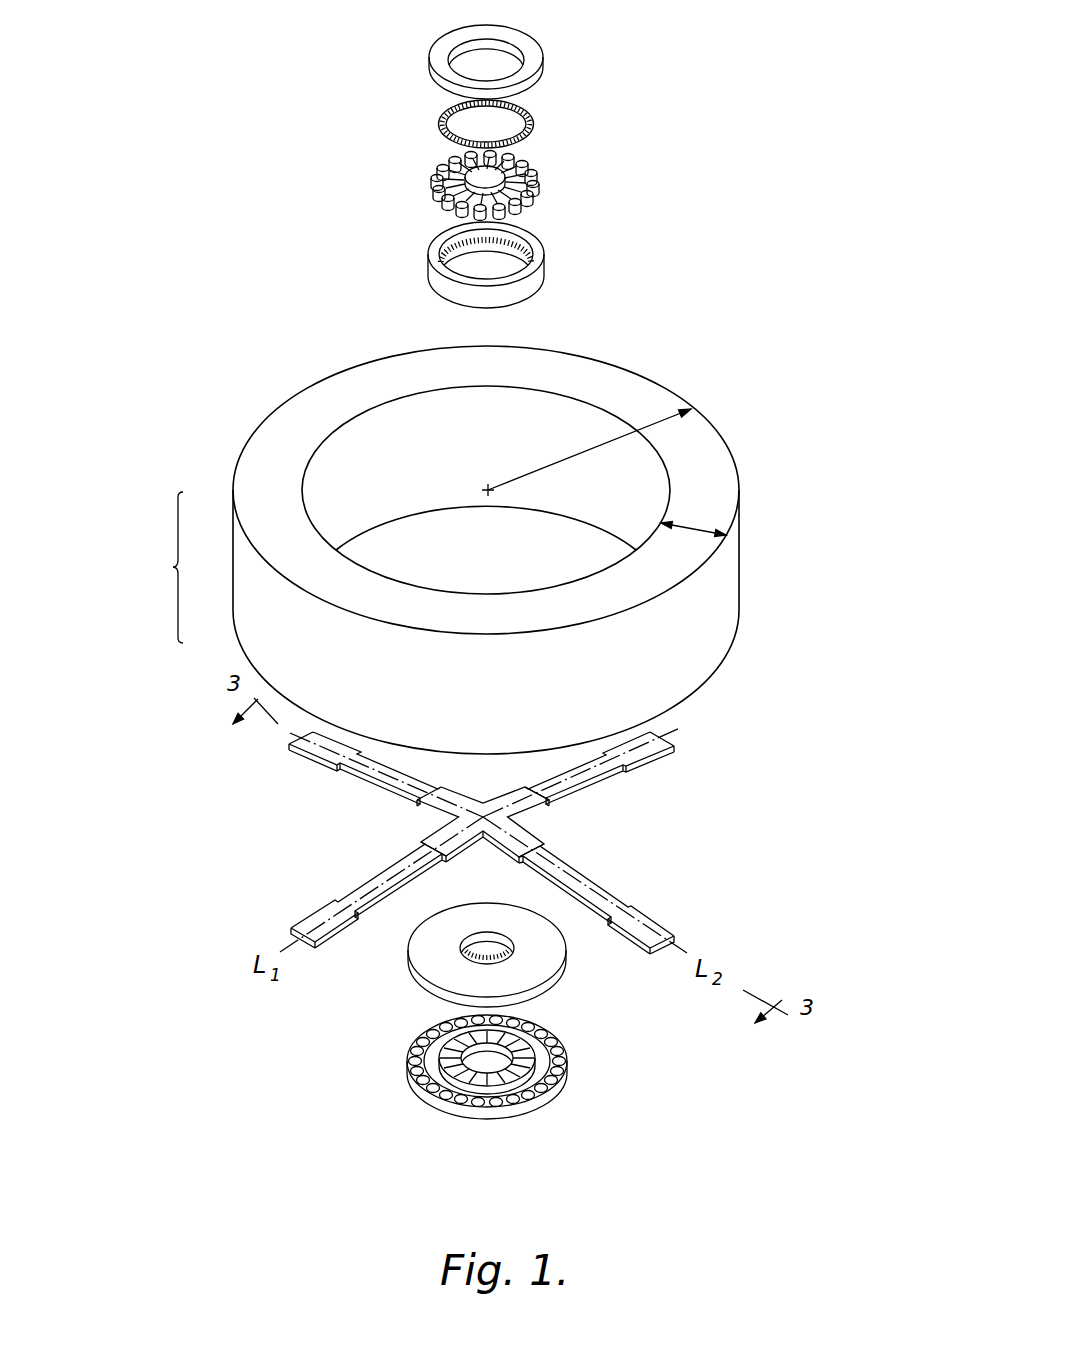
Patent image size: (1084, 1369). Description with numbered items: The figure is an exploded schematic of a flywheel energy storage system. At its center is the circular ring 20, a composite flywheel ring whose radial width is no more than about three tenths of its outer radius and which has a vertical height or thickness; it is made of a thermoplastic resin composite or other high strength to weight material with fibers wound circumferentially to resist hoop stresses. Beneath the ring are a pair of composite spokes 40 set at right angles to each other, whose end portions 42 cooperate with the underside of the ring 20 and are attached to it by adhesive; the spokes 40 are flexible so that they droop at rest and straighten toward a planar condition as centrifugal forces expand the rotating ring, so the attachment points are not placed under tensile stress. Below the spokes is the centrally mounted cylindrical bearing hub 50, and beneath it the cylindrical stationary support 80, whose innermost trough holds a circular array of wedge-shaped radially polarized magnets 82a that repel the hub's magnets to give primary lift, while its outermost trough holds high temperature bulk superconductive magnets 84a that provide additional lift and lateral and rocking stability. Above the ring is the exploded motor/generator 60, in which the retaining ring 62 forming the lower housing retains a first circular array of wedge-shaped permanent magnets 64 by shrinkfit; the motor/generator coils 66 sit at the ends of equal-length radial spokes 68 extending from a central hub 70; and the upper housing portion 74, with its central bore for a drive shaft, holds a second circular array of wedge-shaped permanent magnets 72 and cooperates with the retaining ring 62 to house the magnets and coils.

The circular ring 20 is at (742, 530).
The composite spokes 40 is at (760, 813).
The end portions 42 is at (317, 757).
The bearing hub 50 is at (420, 977).
The motor/generator 60 is at (628, 3).
The retaining ring 62 is at (433, 277).
The first circular array of wedge-shaped permanent magnets 64 is at (455, 246).
The motor/generator coils 66 is at (447, 208).
The radial spokes 68 is at (455, 192).
The central hub 70 is at (480, 175).
The second circular array of wedge-shaped permanent magnets 72 is at (445, 113).
The upper housing portion 74 is at (433, 57).
The cylindrical stationary support 80 is at (537, 1107).
The wedge-shaped radially polarized magnets 82a is at (450, 1060).
The high temperature bulk superconductive magnets 84a is at (560, 1052).